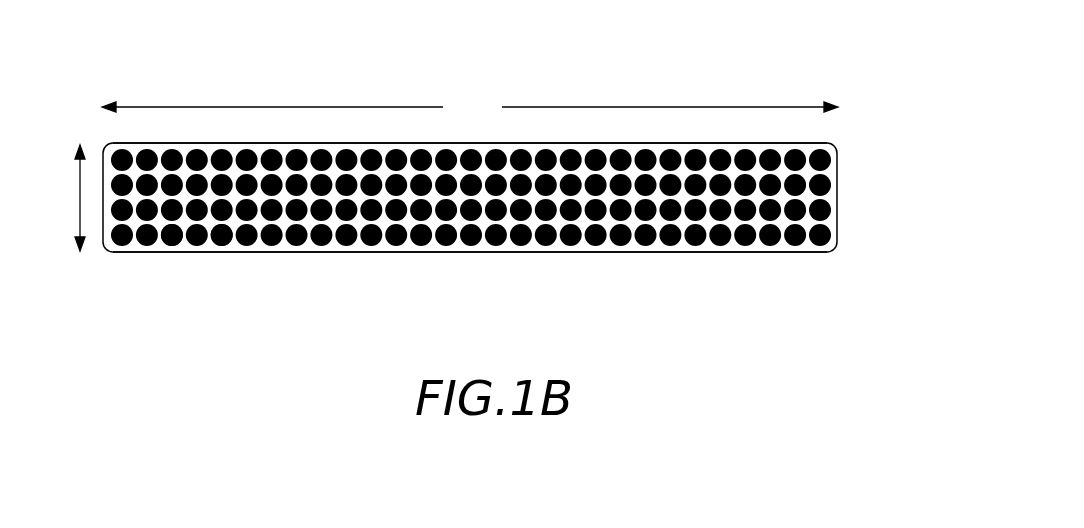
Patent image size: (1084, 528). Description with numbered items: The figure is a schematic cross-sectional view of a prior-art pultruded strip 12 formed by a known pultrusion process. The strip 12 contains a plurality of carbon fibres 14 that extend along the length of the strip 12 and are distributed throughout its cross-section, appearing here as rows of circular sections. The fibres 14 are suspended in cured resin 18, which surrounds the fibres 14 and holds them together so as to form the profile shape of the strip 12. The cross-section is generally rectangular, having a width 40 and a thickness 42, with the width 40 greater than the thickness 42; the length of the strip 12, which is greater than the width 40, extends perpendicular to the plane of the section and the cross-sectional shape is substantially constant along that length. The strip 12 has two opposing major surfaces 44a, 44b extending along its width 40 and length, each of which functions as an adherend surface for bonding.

The pultruded strip 12 is at (900, 106).
The carbon fibres 14 is at (217, 241).
The cured resin 18 is at (166, 245).
The width 40 is at (470, 93).
The thickness 42 is at (64, 198).
The major surface 44a is at (800, 143).
The major surface 44b is at (800, 252).